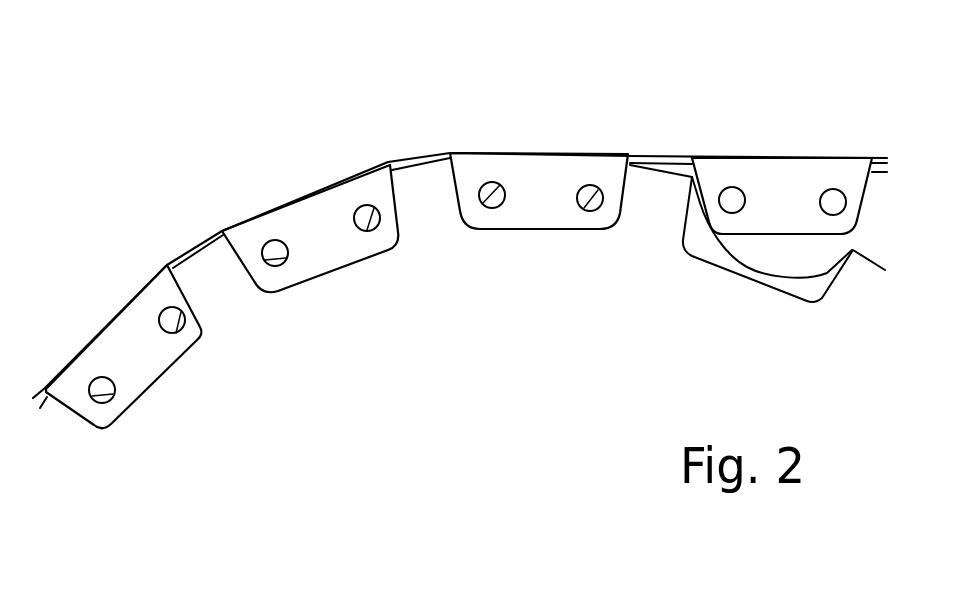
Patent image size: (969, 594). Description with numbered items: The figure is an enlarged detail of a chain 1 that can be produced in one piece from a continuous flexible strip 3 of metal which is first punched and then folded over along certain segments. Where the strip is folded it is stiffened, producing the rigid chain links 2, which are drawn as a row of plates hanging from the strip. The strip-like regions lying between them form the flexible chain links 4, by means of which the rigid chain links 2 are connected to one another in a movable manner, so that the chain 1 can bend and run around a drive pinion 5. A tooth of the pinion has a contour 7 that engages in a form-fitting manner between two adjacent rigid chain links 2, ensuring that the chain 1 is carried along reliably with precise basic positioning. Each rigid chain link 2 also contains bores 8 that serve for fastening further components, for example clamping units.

The chain 1 is at (660, 126).
The rigid chain link 2 is at (776, 193).
The flexible strip 3 is at (877, 146).
The flexible chain link 4 is at (420, 156).
The drive pinion 5 is at (362, 338).
The contour 7 is at (838, 280).
The bore 8 is at (164, 318).